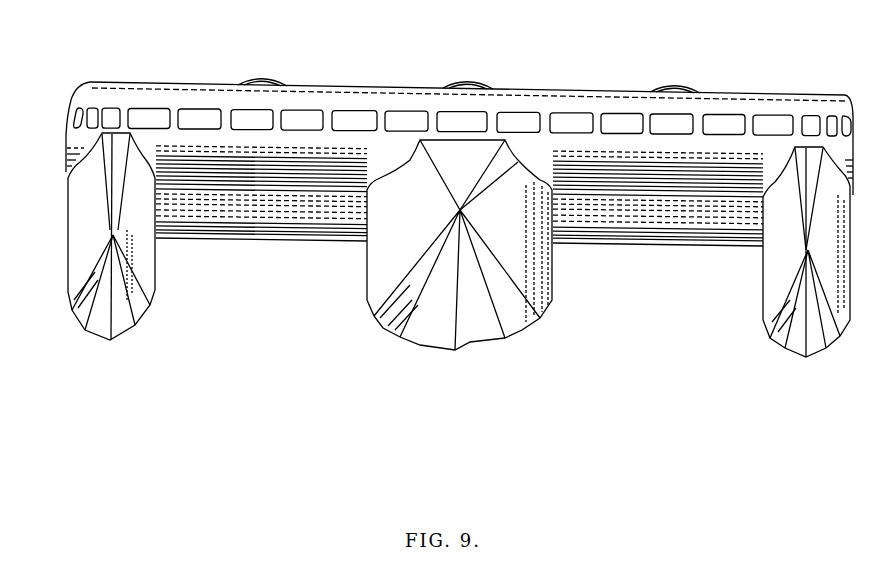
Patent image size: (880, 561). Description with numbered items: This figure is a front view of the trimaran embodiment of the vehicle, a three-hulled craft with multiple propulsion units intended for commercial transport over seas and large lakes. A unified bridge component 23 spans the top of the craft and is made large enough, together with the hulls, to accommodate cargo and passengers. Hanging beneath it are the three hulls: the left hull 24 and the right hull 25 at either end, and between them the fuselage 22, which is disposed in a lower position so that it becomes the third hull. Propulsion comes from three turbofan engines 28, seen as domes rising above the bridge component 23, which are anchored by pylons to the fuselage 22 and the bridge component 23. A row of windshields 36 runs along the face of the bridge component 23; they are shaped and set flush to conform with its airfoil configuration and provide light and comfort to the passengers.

The bridge component 23 is at (140, 83).
The turbofan engines 28 is at (258, 80).
The windshields 36 is at (398, 118).
The right hull 25 is at (67, 273).
The fuselage 22 is at (368, 290).
The left hull 24 is at (762, 302).